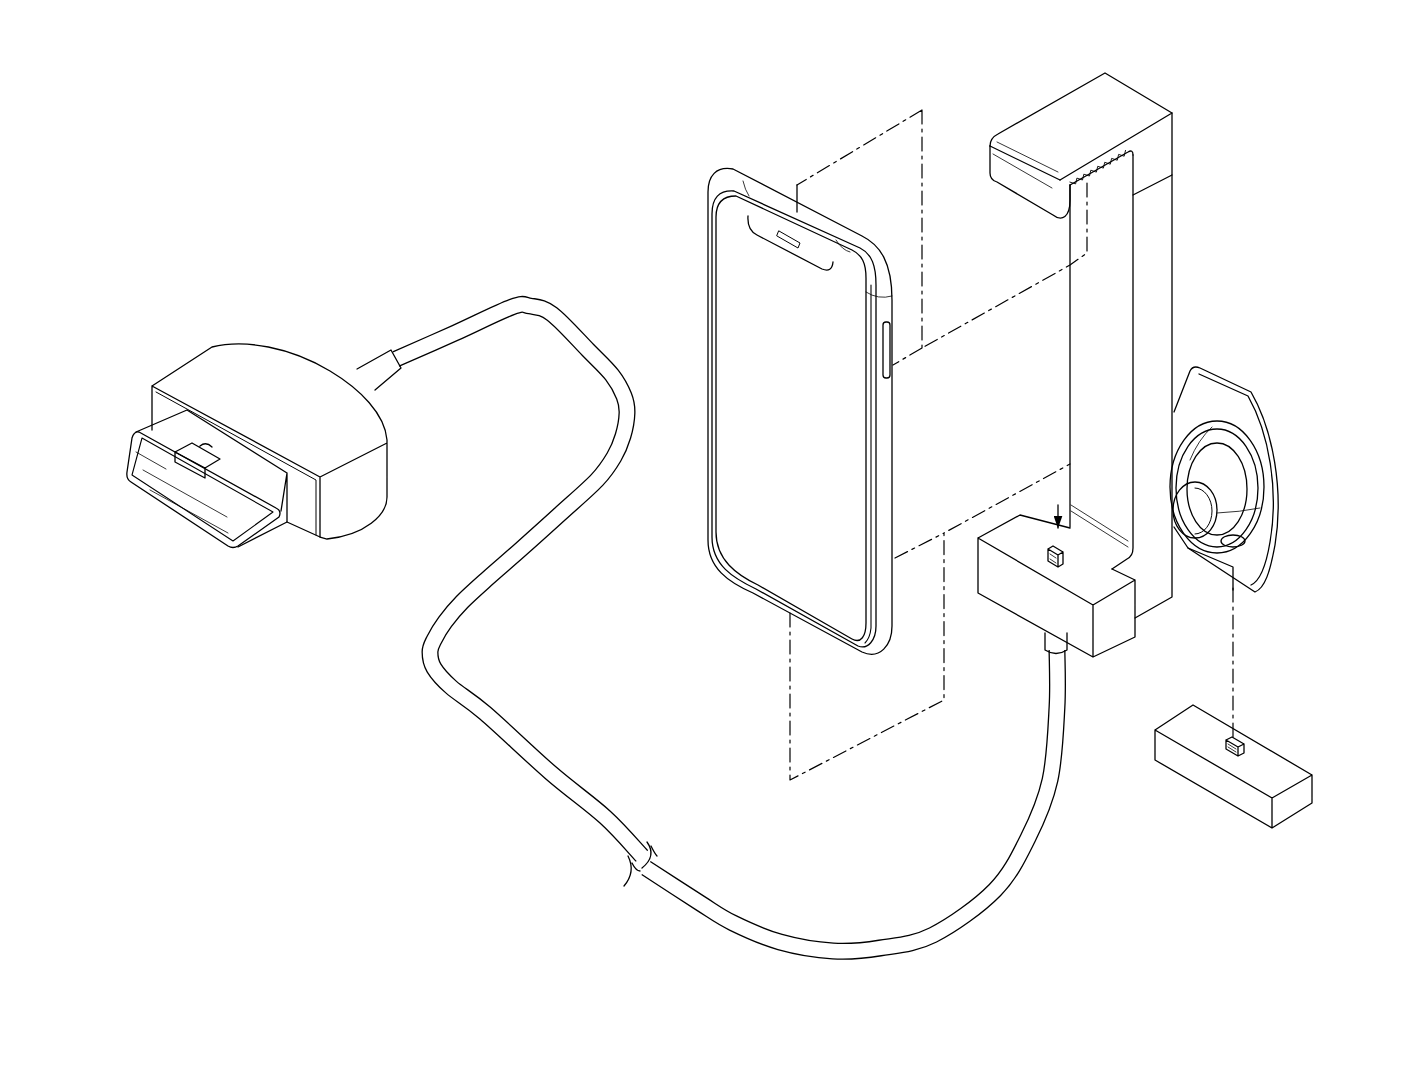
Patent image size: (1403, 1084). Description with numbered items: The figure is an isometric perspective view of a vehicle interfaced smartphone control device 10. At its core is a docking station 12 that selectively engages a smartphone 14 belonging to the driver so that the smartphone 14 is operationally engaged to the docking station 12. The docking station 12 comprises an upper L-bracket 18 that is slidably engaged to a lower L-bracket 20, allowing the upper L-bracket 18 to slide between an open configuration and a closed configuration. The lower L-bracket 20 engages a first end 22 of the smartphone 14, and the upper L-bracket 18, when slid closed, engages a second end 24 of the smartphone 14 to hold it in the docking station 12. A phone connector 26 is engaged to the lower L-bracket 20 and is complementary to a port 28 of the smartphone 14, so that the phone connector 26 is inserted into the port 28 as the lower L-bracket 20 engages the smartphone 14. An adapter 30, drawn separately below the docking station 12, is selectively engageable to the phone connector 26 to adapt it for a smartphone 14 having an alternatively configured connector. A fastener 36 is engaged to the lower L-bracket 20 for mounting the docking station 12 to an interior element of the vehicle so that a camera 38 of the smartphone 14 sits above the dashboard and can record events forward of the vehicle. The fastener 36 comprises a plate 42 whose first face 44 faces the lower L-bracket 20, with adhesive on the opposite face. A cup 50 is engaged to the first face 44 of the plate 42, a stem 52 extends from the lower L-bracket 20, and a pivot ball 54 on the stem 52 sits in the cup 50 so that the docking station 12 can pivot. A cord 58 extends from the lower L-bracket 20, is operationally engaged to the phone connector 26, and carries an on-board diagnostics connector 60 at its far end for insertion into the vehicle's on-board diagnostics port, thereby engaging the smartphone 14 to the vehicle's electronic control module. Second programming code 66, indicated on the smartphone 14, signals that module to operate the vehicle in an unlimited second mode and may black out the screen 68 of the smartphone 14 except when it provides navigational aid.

The vehicle interfaced smartphone control device 10 is at (470, 183).
The docking station 12 is at (1131, 351).
The smartphone 14 is at (748, 367).
The upper L-bracket 18 is at (1104, 106).
The lower L-bracket 20 is at (1156, 308).
The first end 22 is at (752, 593).
The second end 24 is at (852, 231).
The phone connector 26 is at (1078, 553).
The port 28 is at (784, 620).
The adapter 30 is at (1285, 746).
The fastener 36 is at (1275, 465).
The camera 38 is at (826, 205).
The plate 42 is at (1271, 419).
The first face 44 is at (1223, 412).
The cup 50 is at (1222, 478).
The stem 52 is at (1188, 520).
The pivot ball 54 is at (1196, 503).
The cord 58 is at (996, 886).
The on-board diagnostics connector 60 is at (268, 548).
The second programming code 66 is at (772, 326).
The screen 68 is at (750, 278).